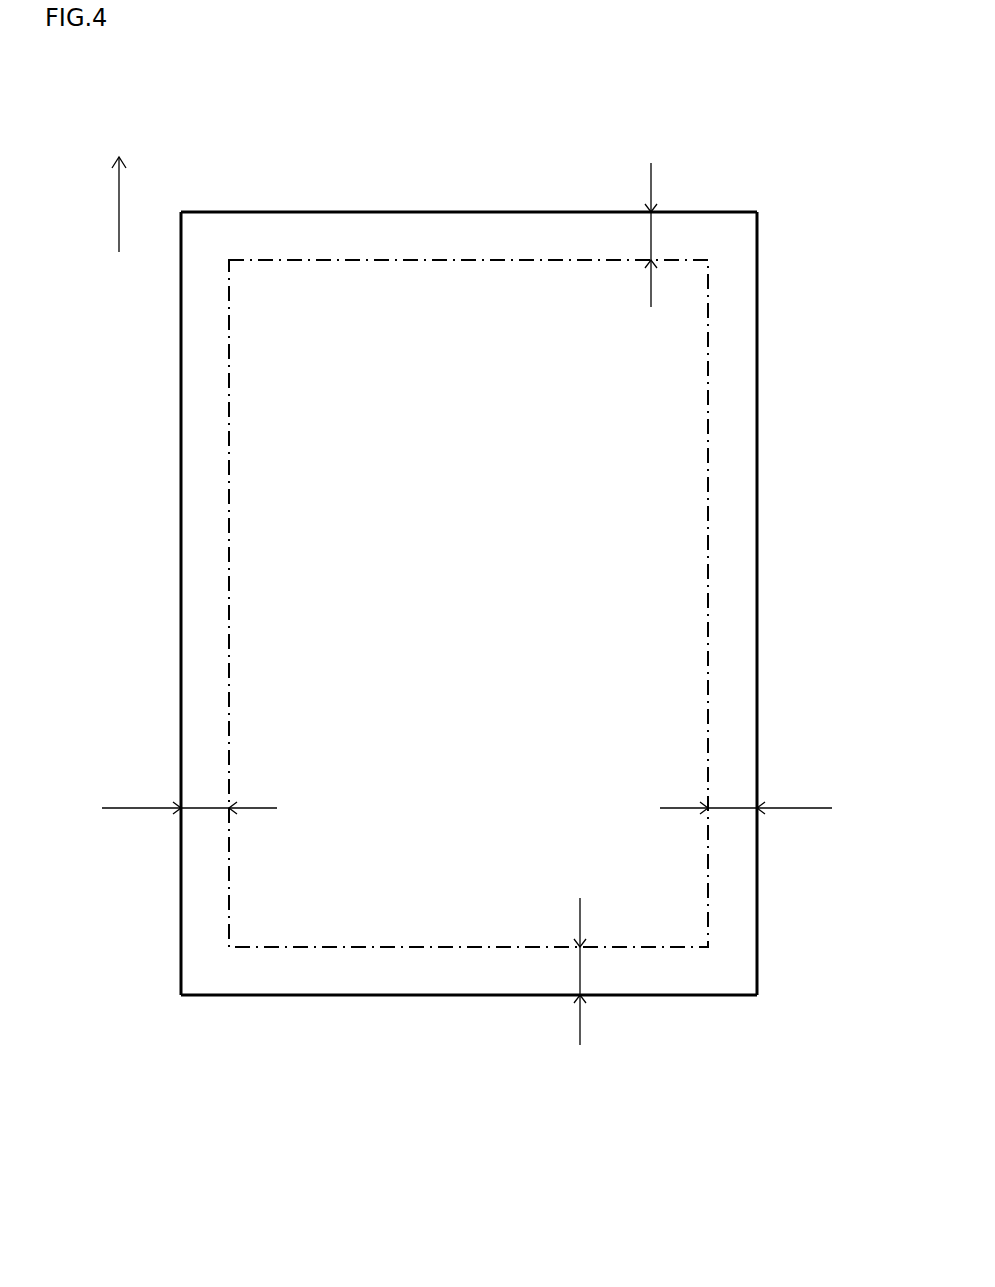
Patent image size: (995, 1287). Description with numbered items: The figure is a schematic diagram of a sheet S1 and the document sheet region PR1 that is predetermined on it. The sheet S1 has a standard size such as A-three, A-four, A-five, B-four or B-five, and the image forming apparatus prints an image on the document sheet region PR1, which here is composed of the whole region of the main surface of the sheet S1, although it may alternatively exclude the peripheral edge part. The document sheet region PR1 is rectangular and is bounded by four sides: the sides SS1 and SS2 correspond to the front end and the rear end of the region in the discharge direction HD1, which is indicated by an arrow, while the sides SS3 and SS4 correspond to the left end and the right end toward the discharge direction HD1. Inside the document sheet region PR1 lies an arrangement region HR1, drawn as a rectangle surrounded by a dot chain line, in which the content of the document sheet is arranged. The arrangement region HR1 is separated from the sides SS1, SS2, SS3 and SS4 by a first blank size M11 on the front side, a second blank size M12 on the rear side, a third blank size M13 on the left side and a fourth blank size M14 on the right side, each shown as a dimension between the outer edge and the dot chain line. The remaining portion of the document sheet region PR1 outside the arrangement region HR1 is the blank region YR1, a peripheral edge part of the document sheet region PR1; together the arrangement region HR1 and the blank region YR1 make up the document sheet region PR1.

The sheet S1 is at (468, 575).
The side SS1 is at (472, 211).
The side SS2 is at (472, 995).
The side SS3 is at (181, 535).
The side SS4 is at (757, 535).
The discharge direction HD1 is at (121, 187).
The first blank size M11 is at (682, 235).
The second blank size M12 is at (607, 971).
The third blank size M13 is at (189, 792).
The fourth blank size M14 is at (746, 792).
The arrangement region HR1 is at (297, 925).
The blank region YR1 is at (367, 973).
The document sheet region PR1 is at (468, 708).